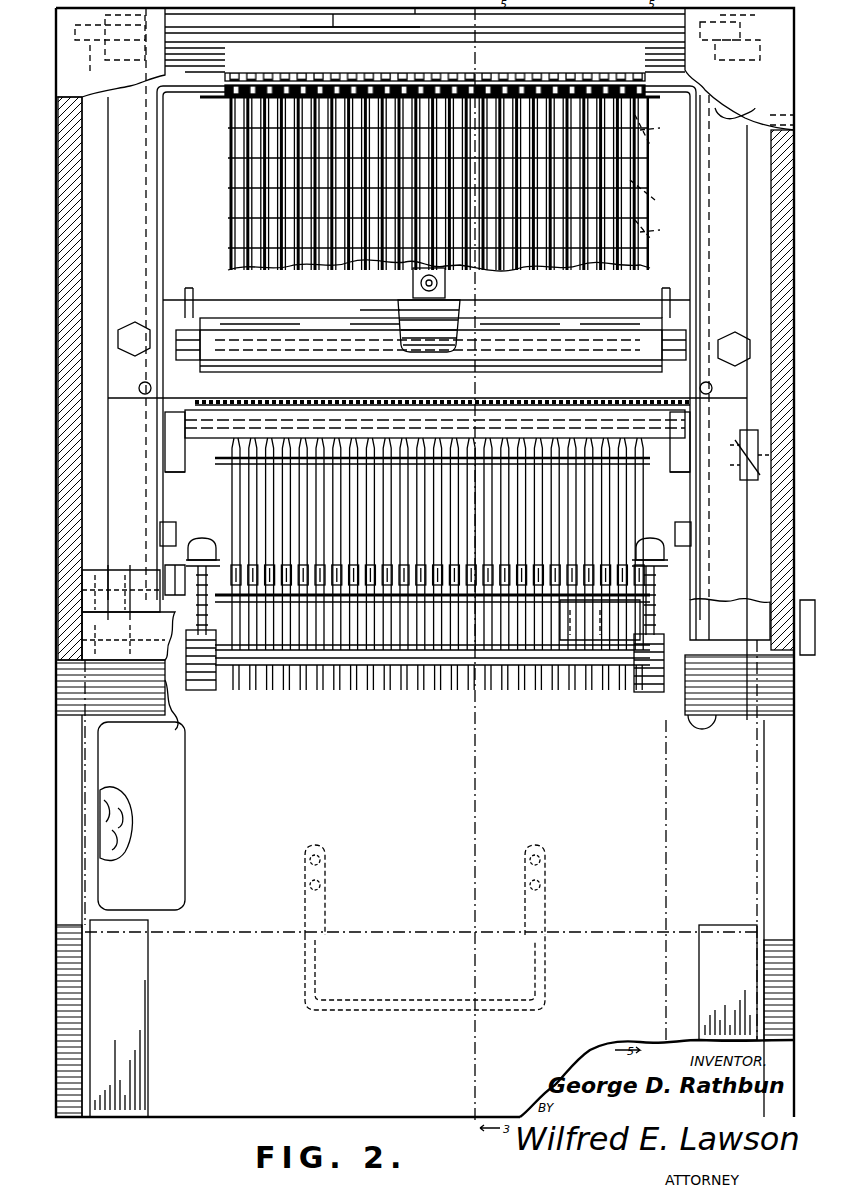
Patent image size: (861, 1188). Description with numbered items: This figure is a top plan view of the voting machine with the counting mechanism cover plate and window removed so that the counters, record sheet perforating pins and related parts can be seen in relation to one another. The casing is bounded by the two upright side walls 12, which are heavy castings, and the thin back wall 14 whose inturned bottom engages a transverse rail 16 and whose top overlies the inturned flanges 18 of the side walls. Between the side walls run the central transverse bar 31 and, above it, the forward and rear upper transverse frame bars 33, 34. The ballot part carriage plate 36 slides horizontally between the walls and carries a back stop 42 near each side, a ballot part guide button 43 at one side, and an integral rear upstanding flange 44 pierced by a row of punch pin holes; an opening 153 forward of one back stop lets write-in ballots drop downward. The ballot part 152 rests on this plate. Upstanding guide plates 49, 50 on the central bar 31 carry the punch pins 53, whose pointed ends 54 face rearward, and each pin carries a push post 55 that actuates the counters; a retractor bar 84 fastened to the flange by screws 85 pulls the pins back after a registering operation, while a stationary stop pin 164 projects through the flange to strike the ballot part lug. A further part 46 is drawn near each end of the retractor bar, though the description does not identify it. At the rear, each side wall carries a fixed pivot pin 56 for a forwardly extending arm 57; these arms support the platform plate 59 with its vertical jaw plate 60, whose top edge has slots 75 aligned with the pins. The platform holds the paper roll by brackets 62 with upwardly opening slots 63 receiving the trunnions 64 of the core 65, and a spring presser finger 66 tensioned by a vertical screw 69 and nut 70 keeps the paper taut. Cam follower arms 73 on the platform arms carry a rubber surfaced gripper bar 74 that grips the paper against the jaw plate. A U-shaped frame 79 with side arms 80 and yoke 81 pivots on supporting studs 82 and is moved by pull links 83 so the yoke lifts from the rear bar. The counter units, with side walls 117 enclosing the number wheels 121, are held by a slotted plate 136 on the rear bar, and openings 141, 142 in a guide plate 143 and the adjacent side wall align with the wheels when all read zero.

The side walls 12 is at (58, 290).
The back wall 14 is at (338, 16).
The transverse rail 16 is at (415, 14).
The inturned flanges 18 is at (160, 52).
The central transverse bar 31 is at (720, 472).
The forward upper transverse frame bar 33 is at (178, 710).
The rear upper transverse frame bar 34 is at (190, 94).
The carriage plate 36 is at (258, 920).
The back stop 42 is at (140, 1062).
The ballot part guide button 43 is at (702, 732).
The rear upstanding flange 44 is at (450, 672).
The adjusting knob 46 is at (214, 690).
The forward guide plate 49 is at (198, 600).
The rear guide plate 50 is at (222, 458).
The punch pins 53 is at (332, 692).
The pointed ends 54 is at (268, 440).
The push post 55 is at (250, 552).
The fixed pivot pin 56 is at (75, 32).
The forwardly extending arm 57 is at (741, 106).
The platform plate 59 is at (112, 212).
The jaw plate 60 is at (120, 392).
The brackets 62 is at (197, 290).
The slots 63 is at (204, 318).
The trunnions 64 is at (182, 300).
The core 65 is at (275, 318).
The spring presser finger 66 is at (462, 312).
The vertical screw 69 is at (413, 280).
The nut 70 is at (392, 312).
The cam follower arm 73 is at (170, 462).
The gripper bar 74 is at (215, 410).
The slots 75 is at (325, 400).
The U-shaped frame 79 is at (148, 160).
The side arms 80 is at (155, 226).
The yoke 81 is at (200, 80).
The supporting studs 82 is at (170, 522).
The pull link 83 is at (180, 562).
The retractor bar 84 is at (205, 538).
The screws 85 is at (632, 688).
The side walls 117 is at (250, 165).
The number wheels 121 is at (250, 228).
The plate 136 is at (360, 45).
The openings 141 is at (657, 176).
The openings 142 is at (770, 160).
The guide plate 143 is at (630, 195).
The ballot part 152 is at (580, 935).
The opening 153 is at (188, 842).
The stop pin 164 is at (88, 596).